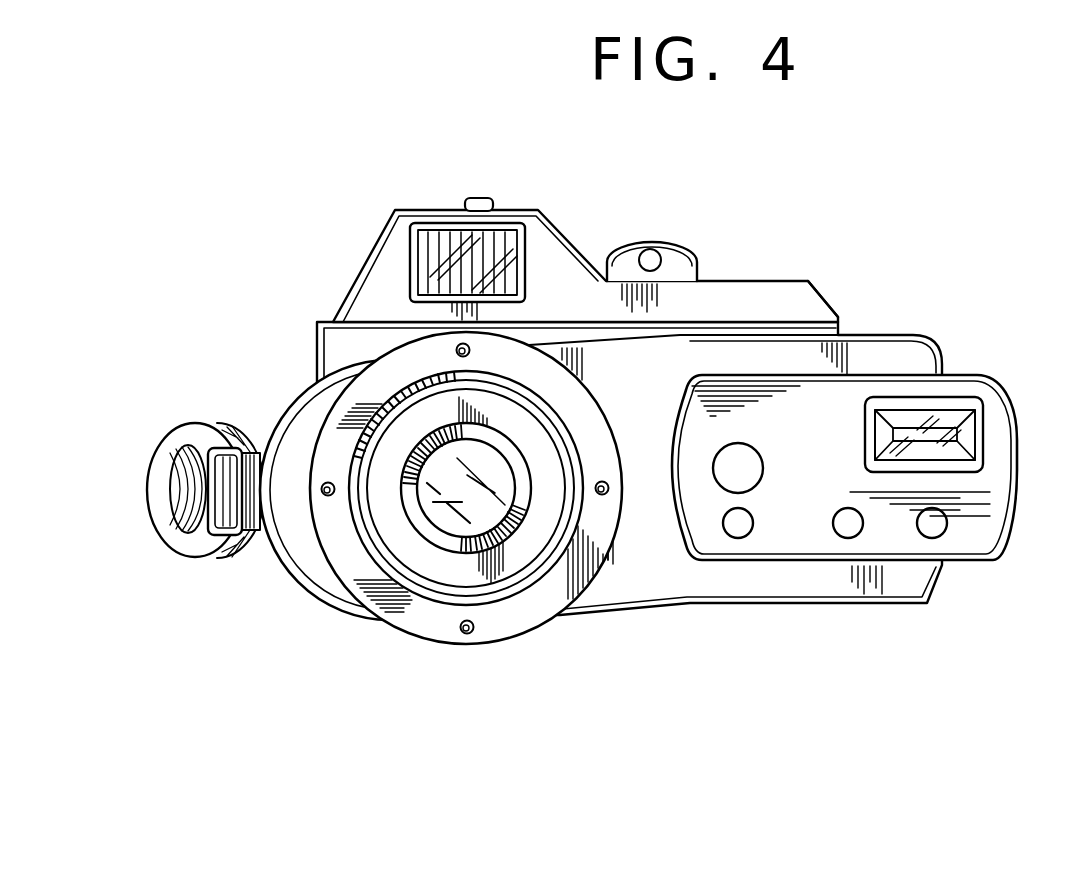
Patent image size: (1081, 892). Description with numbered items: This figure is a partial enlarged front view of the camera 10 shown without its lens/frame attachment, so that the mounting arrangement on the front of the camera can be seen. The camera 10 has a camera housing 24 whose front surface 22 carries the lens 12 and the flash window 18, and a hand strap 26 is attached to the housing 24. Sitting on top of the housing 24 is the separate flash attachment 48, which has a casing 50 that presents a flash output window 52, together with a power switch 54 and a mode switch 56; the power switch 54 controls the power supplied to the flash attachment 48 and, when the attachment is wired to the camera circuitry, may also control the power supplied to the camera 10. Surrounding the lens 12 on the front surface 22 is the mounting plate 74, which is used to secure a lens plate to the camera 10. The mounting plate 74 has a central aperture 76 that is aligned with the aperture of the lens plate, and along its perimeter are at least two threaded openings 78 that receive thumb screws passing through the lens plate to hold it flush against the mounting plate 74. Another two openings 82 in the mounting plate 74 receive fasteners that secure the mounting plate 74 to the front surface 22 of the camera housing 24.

The camera 10 is at (978, 366).
The lens 12 is at (466, 488).
The flash window 18 is at (973, 428).
The front surface 22 is at (765, 583).
The camera housing 24 is at (290, 413).
The hand strap 26 is at (165, 455).
The flash attachment 48 is at (770, 281).
The casing 50 is at (809, 304).
The flash output window 52 is at (427, 250).
The power switch 54 is at (663, 255).
The mode switch 56 is at (472, 198).
The mounting plate 74 is at (552, 596).
The central aperture 76 is at (437, 592).
The threaded openings 78 is at (321, 493).
The openings 82 is at (467, 346).